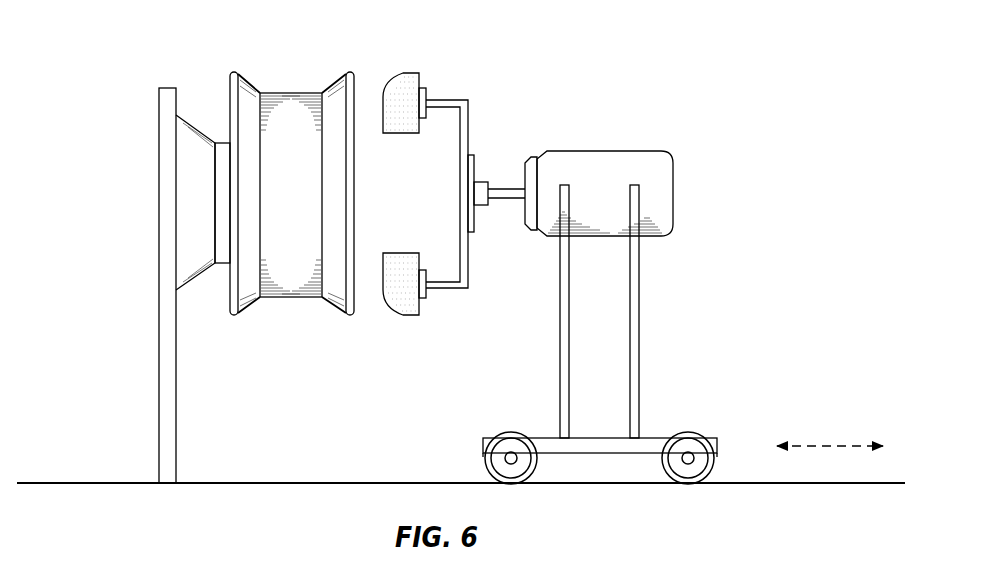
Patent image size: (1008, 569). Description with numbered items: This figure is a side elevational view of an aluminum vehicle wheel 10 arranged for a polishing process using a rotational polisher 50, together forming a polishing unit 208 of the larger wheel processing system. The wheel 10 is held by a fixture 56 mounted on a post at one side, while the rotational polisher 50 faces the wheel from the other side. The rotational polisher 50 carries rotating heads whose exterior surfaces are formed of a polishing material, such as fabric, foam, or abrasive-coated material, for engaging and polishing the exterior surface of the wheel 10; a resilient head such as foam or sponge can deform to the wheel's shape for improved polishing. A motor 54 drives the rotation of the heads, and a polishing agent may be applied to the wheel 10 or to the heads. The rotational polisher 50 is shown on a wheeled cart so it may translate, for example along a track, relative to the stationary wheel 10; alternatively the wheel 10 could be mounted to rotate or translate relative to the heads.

The polishing unit 208 is at (722, 63).
The aluminum vehicle wheel 10 is at (290, 93).
The rotational polisher 50 is at (556, 108).
The motor 54 is at (665, 178).
The fixture 56 is at (166, 385).